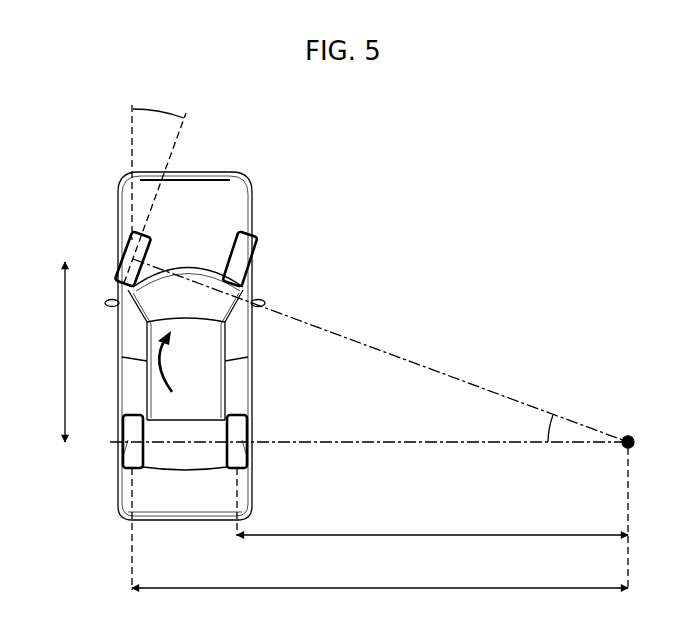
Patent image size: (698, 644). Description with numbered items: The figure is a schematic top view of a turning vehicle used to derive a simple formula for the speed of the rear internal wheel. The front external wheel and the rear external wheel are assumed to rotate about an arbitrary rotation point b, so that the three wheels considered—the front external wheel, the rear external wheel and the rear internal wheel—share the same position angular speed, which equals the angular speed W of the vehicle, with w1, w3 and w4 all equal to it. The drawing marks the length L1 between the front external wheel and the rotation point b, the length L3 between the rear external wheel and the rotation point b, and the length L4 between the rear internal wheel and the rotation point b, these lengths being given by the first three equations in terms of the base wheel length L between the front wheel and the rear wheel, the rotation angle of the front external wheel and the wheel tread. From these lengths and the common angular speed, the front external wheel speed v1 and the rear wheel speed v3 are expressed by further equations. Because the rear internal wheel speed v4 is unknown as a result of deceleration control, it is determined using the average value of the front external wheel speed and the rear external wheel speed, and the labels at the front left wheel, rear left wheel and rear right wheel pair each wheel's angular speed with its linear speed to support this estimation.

The position angular speed of front external wheel w1 is at (95, 259).
The speed of front external wheel v1 is at (132, 262).
The position angular speed of rear external wheel w3 is at (91, 444).
The speed of rear wheel v3 is at (110, 442).
The position angular speed of rear internal wheel w4 is at (278, 444).
The rear internal wheel speed v4 is at (278, 444).
The base wheel length L is at (55, 352).
The length between front external wheel and rotation point L1 is at (380, 350).
The length between rear external wheel and rotation point L3 is at (380, 575).
The length between rear internal wheel and rotation point L4 is at (432, 522).
The rotation point b is at (642, 510).
The angular speed of vehicle W is at (177, 361).